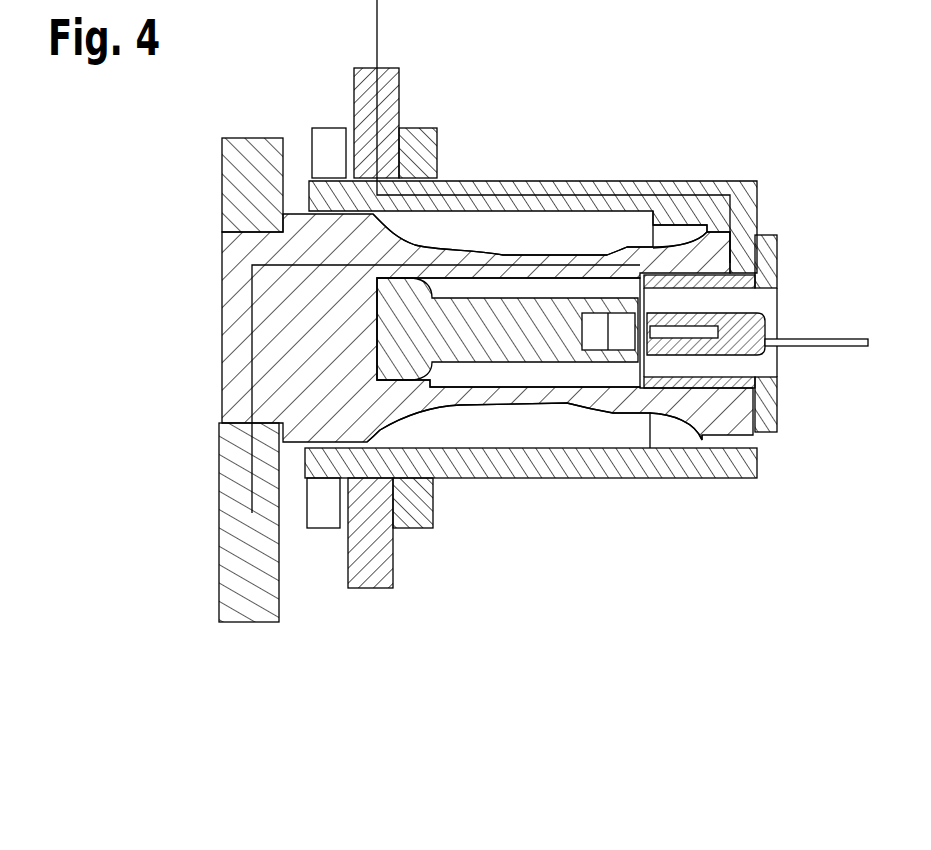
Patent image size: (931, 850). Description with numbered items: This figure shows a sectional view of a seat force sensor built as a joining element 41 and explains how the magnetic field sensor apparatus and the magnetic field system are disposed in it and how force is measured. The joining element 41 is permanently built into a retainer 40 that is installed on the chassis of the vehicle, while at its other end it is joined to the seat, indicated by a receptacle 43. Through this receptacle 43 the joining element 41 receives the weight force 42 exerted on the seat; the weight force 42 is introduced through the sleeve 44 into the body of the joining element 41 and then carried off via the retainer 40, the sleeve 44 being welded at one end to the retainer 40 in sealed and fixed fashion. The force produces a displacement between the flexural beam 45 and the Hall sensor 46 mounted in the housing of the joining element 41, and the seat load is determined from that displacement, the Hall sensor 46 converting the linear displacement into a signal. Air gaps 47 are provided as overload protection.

The retainer 40 is at (253, 183).
The joining element 41 is at (238, 339).
The weight force 42 is at (377, 13).
The receptacle 43 is at (363, 86).
The sleeve 44 is at (611, 190).
The flexural beam 45 is at (620, 353).
The Hall sensor 46 is at (695, 347).
The air gaps 47 is at (406, 442).